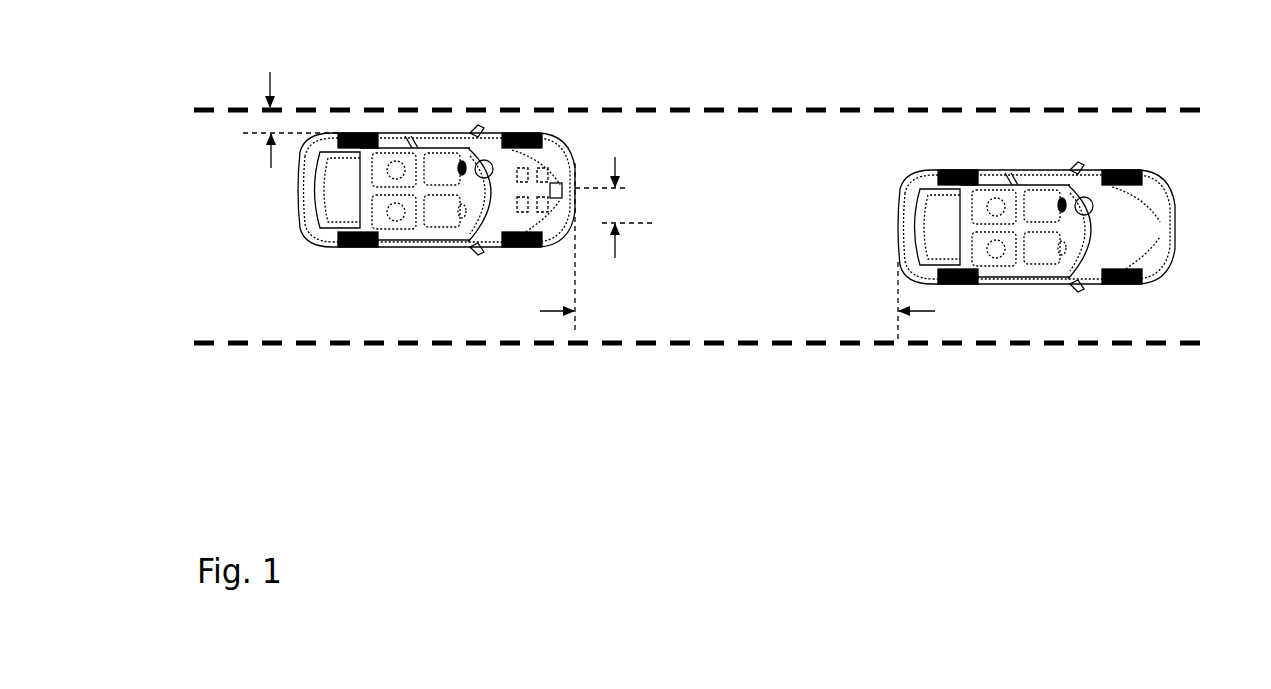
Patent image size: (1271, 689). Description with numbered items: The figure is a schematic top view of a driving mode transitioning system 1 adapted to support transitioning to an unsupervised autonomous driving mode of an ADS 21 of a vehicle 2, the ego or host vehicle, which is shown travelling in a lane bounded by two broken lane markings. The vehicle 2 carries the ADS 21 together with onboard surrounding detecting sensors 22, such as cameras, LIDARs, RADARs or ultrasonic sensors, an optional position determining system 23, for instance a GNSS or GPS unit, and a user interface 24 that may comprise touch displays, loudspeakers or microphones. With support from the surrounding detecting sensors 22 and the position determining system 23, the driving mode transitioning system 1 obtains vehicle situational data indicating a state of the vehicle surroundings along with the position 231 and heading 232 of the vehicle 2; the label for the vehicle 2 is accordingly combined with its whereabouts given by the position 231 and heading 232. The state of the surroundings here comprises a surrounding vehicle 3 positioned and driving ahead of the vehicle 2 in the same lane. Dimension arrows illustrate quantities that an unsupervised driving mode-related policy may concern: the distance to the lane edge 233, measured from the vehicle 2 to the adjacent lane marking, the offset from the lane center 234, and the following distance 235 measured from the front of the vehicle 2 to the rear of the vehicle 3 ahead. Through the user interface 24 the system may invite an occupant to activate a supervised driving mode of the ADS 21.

The driving mode transitioning system 1 is at (564, 185).
The vehicle 2 is at (262, 217).
The surrounding vehicle 3 is at (1183, 268).
The ADS 21 is at (549, 169).
The surrounding detecting sensors 22 is at (516, 169).
The position determining system 23 is at (516, 210).
The user interface 24 is at (549, 211).
The position 231 is at (436, 190).
The heading 232 is at (436, 190).
The distance to lane edge 233 is at (294, 107).
The offset from lane center 234 is at (623, 212).
The following distance 235 is at (763, 251).